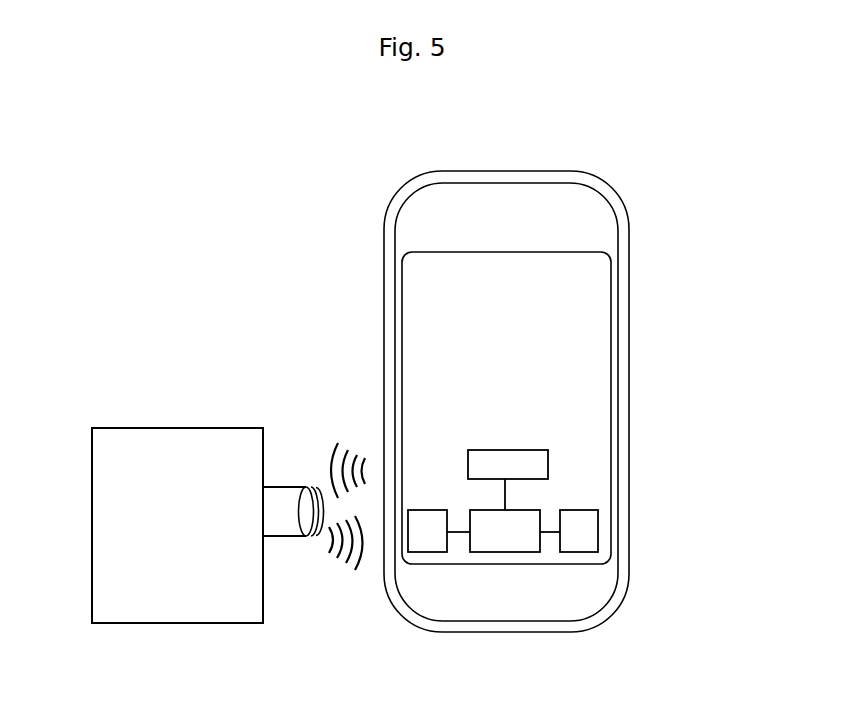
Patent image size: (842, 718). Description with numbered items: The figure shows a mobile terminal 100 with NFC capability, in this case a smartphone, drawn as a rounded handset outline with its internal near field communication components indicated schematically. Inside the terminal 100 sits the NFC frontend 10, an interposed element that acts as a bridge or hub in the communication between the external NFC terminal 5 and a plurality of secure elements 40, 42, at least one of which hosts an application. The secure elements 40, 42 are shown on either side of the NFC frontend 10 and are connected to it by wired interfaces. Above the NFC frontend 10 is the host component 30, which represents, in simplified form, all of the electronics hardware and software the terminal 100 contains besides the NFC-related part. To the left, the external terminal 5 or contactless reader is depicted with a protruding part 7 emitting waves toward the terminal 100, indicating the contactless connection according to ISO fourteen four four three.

The mobile terminal 100 is at (610, 191).
The host component 30 is at (548, 465).
The NFC frontend 10 is at (513, 532).
The secure element 42 is at (420, 549).
The secure element 40 is at (580, 549).
The external NFC terminal 5 is at (240, 427).
The transmitter 7 is at (295, 483).